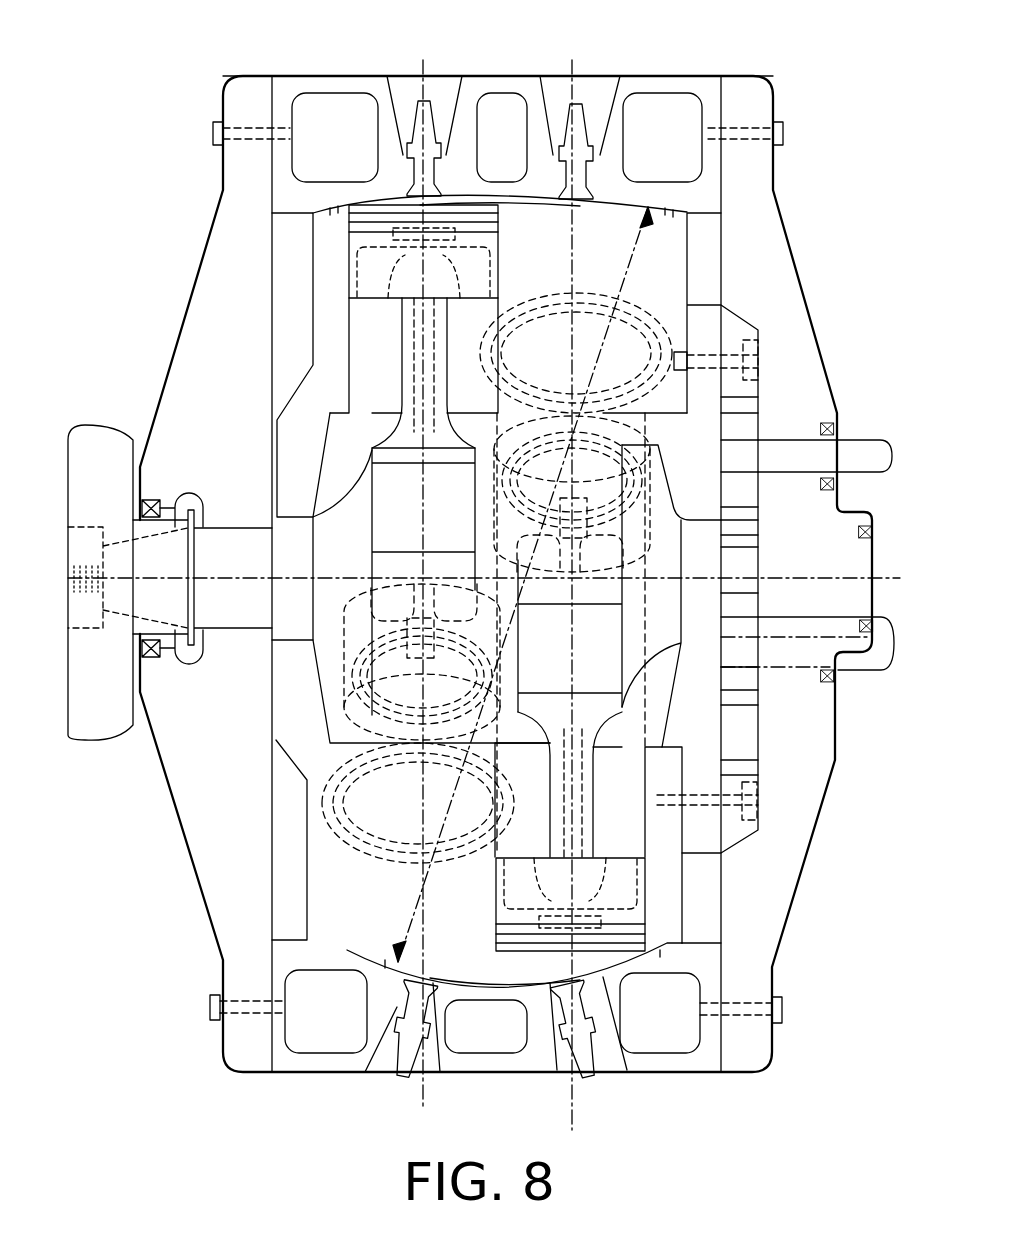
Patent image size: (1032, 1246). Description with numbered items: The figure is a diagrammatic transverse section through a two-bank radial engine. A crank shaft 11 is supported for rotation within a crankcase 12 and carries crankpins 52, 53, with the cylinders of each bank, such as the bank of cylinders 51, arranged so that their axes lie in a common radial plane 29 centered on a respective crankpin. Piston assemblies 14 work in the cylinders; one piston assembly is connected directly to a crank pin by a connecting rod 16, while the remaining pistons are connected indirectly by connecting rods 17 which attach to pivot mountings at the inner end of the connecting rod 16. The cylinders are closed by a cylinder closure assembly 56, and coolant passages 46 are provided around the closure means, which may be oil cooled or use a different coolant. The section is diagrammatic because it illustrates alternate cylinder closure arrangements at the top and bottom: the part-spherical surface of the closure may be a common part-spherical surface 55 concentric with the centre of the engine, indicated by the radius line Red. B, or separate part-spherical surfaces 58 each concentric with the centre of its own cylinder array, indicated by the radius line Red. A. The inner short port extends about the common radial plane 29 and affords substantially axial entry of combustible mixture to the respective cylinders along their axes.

The crank shaft 11 is at (810, 572).
The crankcase 12 is at (773, 373).
The piston assemblies 14 is at (815, 893).
The connecting rod 16 is at (573, 817).
The connecting rods 17 is at (578, 538).
The common radial plane 29 is at (423, 1085).
The coolant passages 46 is at (800, 968).
The bank of cylinders 51 is at (327, 237).
The crankpin 52 is at (579, 659).
The crankpin 53 is at (380, 512).
The common part-spherical surface 55 is at (607, 973).
The cylinder closure assembly 56 is at (633, 80).
The separate part-spherical surfaces 58 is at (500, 200).